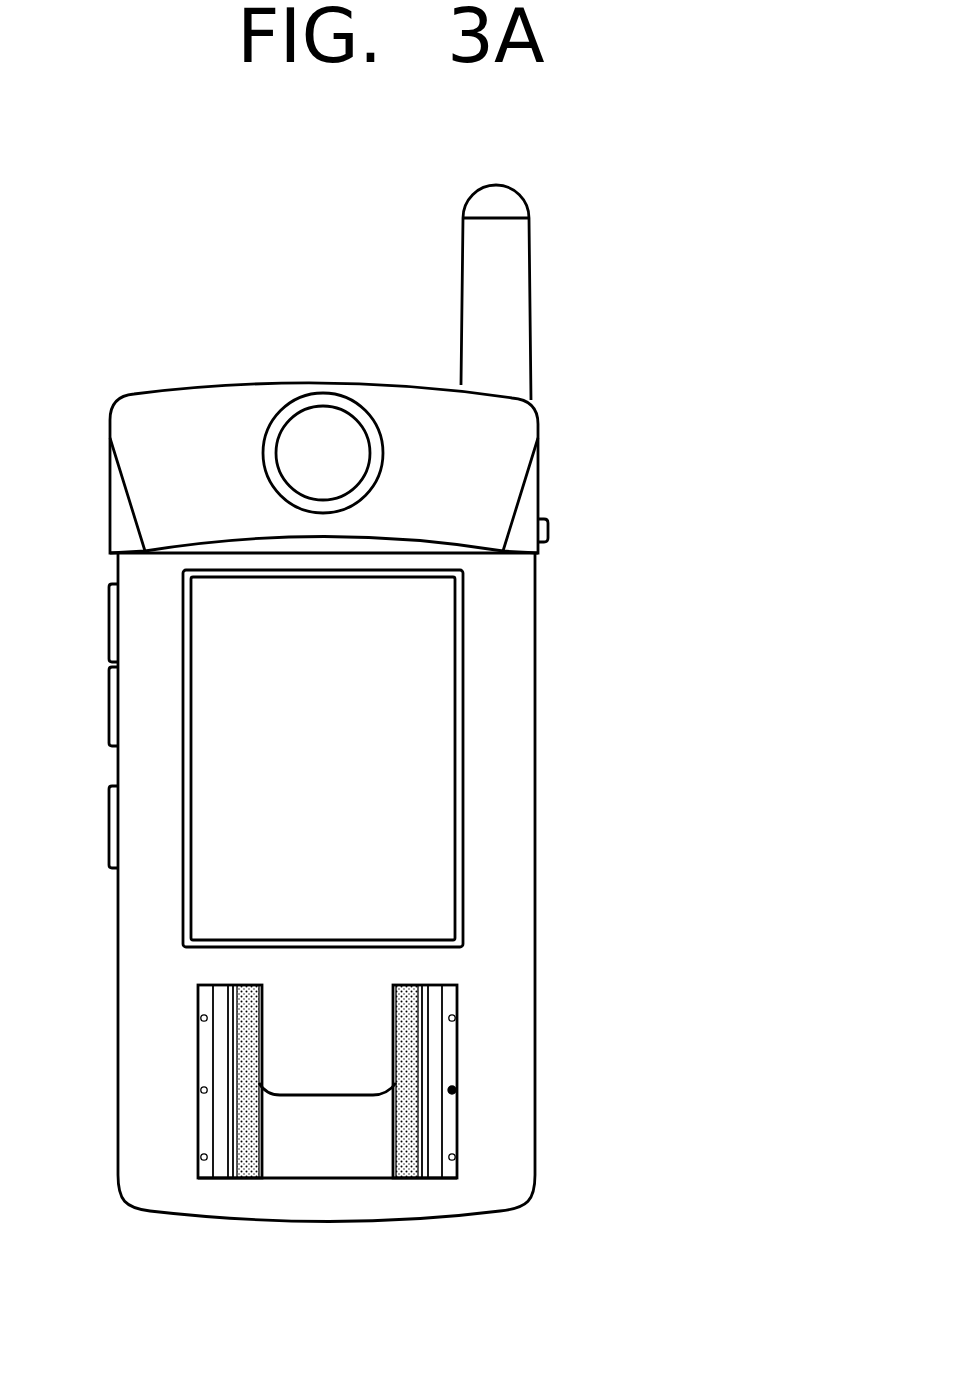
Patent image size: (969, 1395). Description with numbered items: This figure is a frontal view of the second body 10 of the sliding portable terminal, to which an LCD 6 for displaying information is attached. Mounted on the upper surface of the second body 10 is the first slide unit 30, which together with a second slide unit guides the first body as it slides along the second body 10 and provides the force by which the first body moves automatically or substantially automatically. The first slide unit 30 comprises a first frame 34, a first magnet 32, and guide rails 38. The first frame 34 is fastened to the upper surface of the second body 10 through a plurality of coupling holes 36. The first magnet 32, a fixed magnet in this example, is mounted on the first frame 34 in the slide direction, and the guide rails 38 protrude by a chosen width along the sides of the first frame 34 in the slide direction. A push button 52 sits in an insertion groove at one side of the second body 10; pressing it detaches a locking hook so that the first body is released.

The LCD 6 is at (430, 689).
The second body 10 is at (478, 963).
The first slide unit 30 is at (340, 1172).
The first magnet 32 is at (405, 1175).
The first frame 34 is at (303, 1112).
The coupling holes 36 is at (455, 1018).
The guide rails 38 is at (220, 1122).
The push button 52 is at (548, 532).